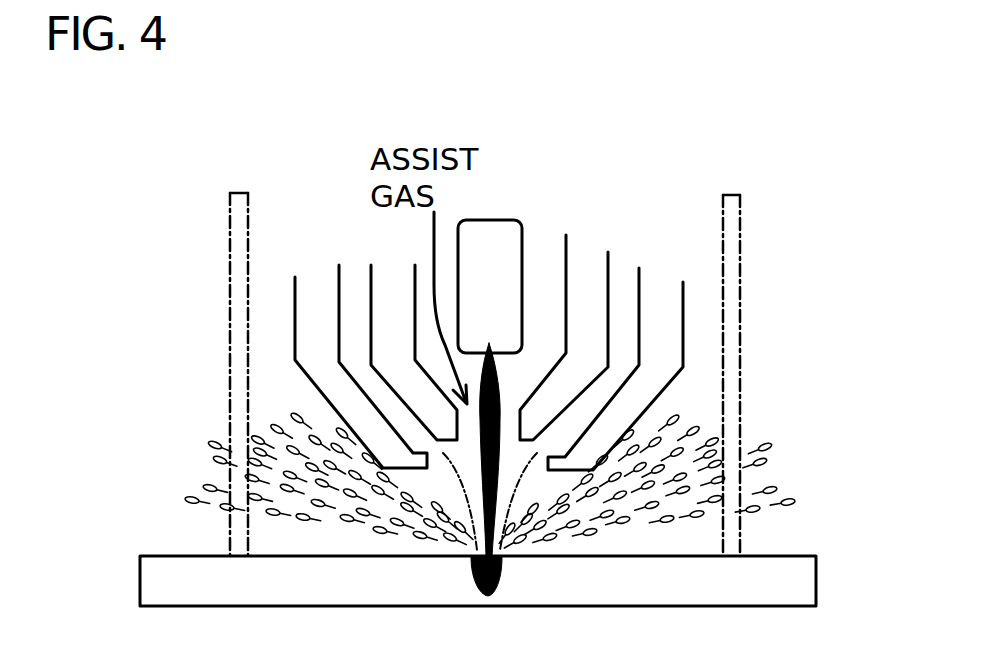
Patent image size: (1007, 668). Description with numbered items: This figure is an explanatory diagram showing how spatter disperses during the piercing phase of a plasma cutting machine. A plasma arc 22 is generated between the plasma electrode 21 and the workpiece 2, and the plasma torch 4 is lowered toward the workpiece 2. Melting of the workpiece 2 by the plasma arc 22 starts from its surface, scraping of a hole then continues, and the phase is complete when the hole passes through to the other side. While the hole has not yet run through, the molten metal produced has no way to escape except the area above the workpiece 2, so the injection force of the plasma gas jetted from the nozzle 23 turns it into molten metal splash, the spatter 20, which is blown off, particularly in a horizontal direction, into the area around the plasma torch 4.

The workpiece 2 is at (805, 555).
The plasma torch 4 is at (668, 318).
The spatter 20 is at (765, 498).
The plasma electrode 21 is at (487, 232).
The plasma arc 22 is at (478, 408).
The nozzle 23 is at (588, 279).